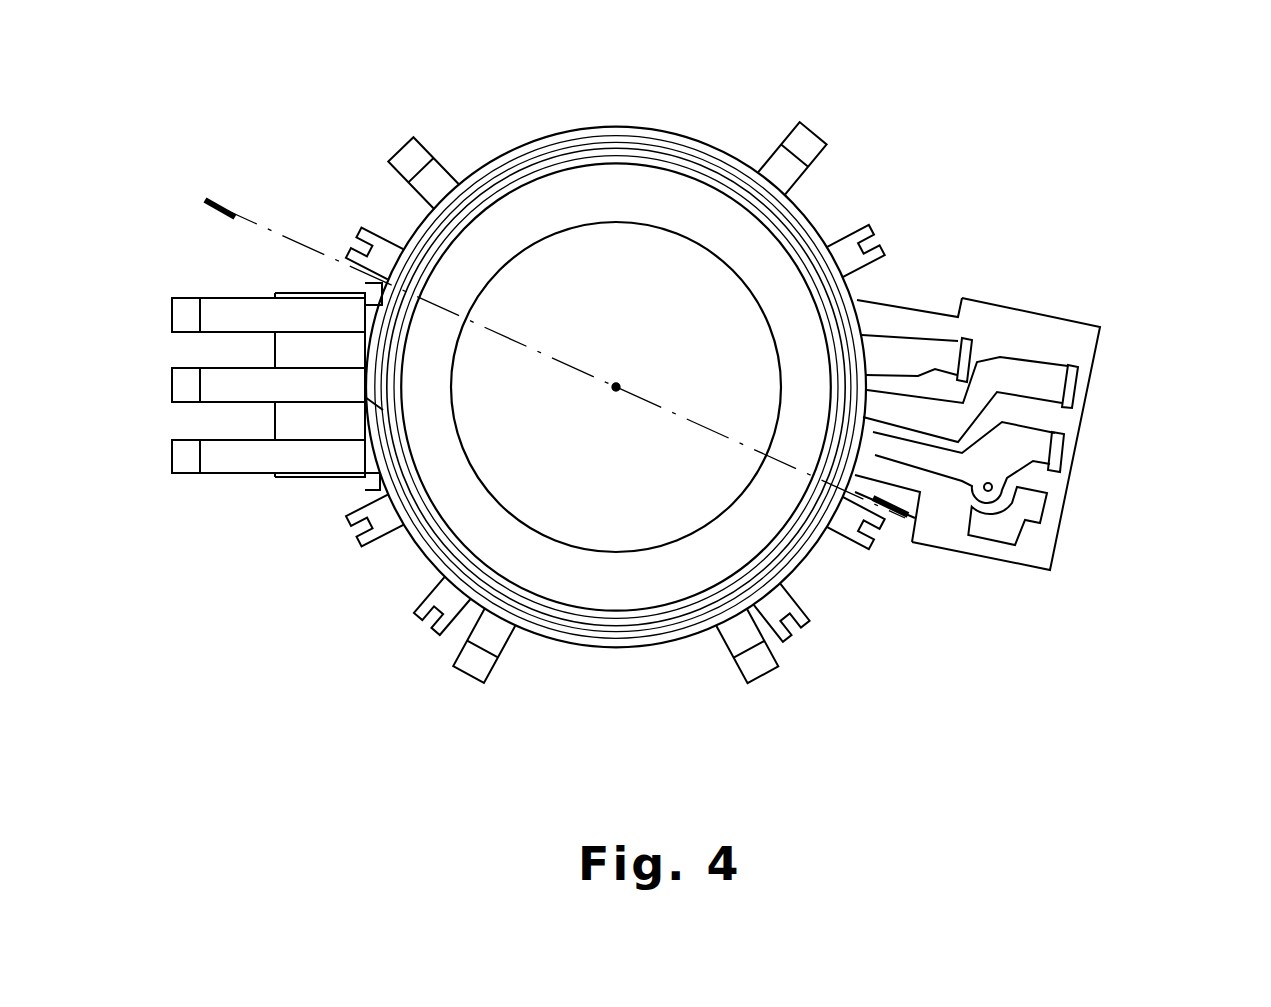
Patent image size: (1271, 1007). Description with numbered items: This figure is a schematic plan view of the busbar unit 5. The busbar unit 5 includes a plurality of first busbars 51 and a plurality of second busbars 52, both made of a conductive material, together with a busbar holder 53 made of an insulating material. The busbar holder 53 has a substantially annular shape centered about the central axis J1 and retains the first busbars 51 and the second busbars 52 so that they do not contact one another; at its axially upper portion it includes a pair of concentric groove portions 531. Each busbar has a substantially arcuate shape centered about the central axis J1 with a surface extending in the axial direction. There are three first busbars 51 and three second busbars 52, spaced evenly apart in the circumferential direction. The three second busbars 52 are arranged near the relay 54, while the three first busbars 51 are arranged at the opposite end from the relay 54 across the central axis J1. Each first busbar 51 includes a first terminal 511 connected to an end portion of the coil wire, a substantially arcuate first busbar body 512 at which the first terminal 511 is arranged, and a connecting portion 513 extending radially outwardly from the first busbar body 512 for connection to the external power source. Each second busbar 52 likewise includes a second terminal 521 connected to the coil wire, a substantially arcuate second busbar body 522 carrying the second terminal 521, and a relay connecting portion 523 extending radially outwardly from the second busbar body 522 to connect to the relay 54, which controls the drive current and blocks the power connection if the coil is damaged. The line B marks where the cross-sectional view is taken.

The busbar unit 5 is at (206, 40).
The first busbar 51 is at (304, 407).
The first terminal 511 is at (355, 228).
The first busbar body 512 is at (360, 290).
The connecting portion 513 is at (205, 308).
The second busbar 52 is at (905, 429).
The second terminal 521 is at (868, 248).
The second busbar body 522 is at (855, 300).
The relay connecting portion 523 is at (925, 353).
The busbar holder 53 is at (665, 130).
The groove portion 531 is at (558, 160).
The relay 54 is at (1102, 430).
The central axis J1 is at (619, 383).
The line B- B is at (226, 222).